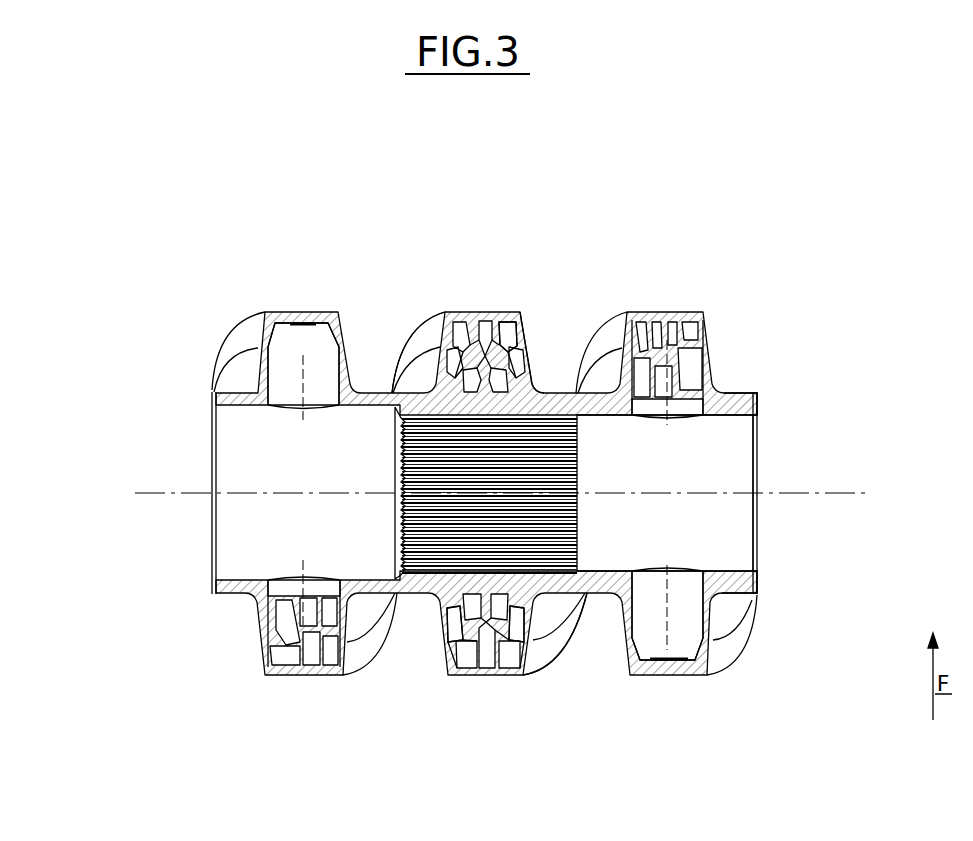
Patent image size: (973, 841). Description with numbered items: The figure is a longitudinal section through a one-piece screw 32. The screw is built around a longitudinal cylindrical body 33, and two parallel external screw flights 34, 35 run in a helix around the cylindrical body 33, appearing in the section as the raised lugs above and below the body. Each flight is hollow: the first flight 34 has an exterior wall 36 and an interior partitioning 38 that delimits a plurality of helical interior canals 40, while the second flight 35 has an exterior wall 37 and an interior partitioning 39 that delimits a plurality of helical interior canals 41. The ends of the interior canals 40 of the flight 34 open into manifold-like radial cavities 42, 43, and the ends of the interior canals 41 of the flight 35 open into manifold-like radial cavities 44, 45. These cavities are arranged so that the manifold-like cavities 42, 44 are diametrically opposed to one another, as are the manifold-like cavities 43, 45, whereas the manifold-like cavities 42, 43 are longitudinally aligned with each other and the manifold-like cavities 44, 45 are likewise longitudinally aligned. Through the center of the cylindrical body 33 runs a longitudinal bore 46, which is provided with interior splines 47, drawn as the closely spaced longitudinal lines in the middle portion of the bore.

The one-piece screw 32 is at (218, 297).
The longitudinal cylindrical body 33 is at (746, 408).
The external screw flight 34 is at (428, 324).
The external screw flight 35 is at (541, 661).
The exterior wall 36 is at (527, 362).
The exterior wall 37 is at (446, 622).
The interior partitioning 38 is at (497, 312).
The interior partitioning 39 is at (482, 645).
The helical interior canal 40 is at (487, 333).
The helical interior canal 41 is at (510, 655).
The manifold-like radial cavity 42 is at (280, 592).
The manifold-like radial cavity 43 is at (654, 622).
The manifold-like radial cavity 44 is at (317, 367).
The manifold-like radial cavity 45 is at (688, 402).
The longitudinal bore 46 is at (746, 455).
The interior splines 47 is at (436, 527).